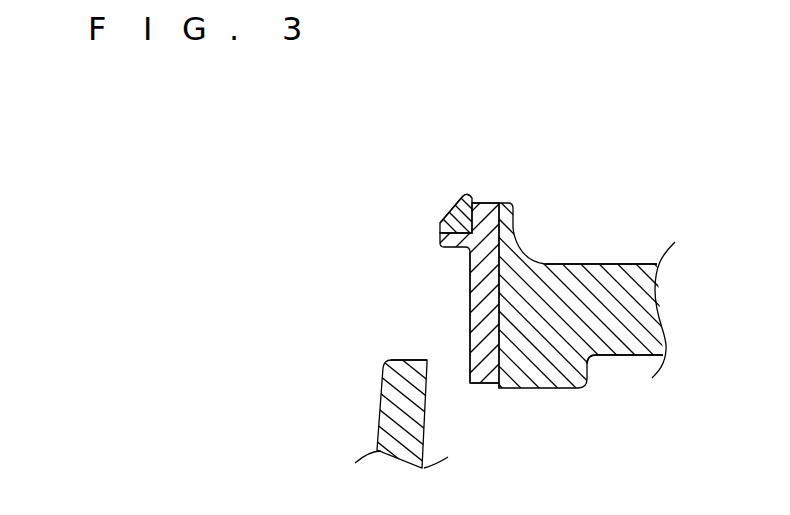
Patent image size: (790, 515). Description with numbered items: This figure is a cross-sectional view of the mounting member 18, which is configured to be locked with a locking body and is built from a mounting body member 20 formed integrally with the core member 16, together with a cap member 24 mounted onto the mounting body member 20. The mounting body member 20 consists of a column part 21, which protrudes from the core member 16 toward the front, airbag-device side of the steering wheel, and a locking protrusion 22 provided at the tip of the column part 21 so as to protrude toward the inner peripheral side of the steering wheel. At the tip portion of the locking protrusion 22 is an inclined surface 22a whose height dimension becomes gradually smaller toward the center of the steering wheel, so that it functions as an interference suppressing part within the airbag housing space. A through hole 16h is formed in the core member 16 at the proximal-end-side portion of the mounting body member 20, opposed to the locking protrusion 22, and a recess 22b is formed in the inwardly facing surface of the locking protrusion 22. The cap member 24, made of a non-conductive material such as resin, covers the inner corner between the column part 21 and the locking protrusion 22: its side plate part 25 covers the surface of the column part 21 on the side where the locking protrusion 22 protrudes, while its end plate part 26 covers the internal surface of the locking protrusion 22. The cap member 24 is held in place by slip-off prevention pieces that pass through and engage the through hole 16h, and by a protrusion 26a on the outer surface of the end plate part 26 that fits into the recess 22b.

The core member 16 is at (382, 374).
The through hole 16h is at (428, 378).
The mounting member 18 is at (508, 203).
The mounting body member 20 is at (515, 222).
The column part 21 is at (488, 385).
The locking protrusion 22 is at (438, 230).
The inclined surface 22a is at (451, 210).
The recess 22b is at (480, 196).
The cap member 24 is at (500, 348).
The side plate part 25 is at (469, 290).
The end plate part 26 is at (439, 245).
The protrusion 26a is at (490, 202).